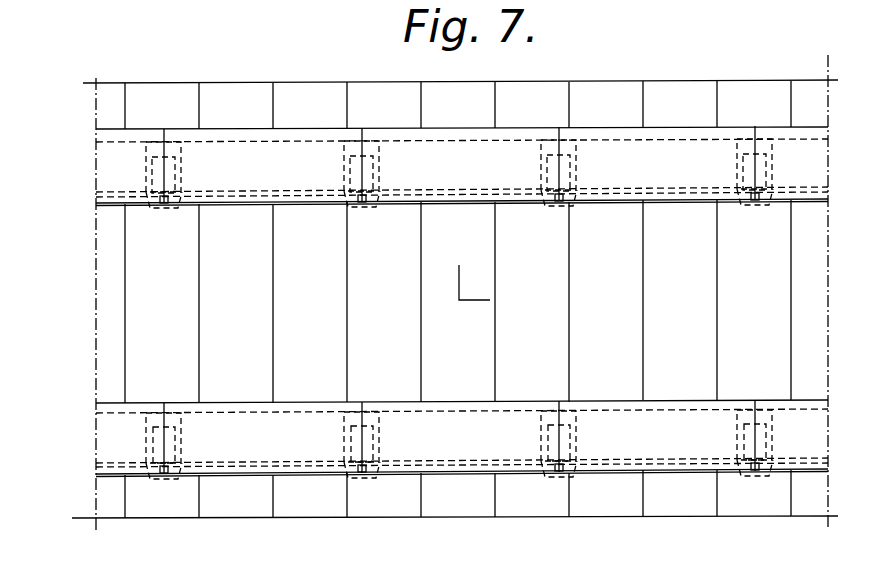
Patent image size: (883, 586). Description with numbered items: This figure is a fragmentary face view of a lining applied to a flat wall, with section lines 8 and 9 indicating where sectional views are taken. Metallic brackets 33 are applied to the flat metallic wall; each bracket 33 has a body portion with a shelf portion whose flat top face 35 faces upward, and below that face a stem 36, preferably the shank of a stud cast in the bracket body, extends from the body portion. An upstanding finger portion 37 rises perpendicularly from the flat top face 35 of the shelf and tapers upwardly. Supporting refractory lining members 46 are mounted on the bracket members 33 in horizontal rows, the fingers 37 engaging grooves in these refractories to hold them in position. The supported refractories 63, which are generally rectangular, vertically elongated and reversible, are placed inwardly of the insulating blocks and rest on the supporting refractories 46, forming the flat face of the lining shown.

The section line 8- 8 is at (73, 147).
The section line 9- 9 is at (139, 41).
The bracket 33 is at (170, 210).
The flat top face 35 is at (770, 187).
The stem 36 is at (458, 190).
The finger portion 37 is at (172, 167).
The supporting refractory lining member 46 is at (275, 147).
The supported refractory 63 is at (600, 107).